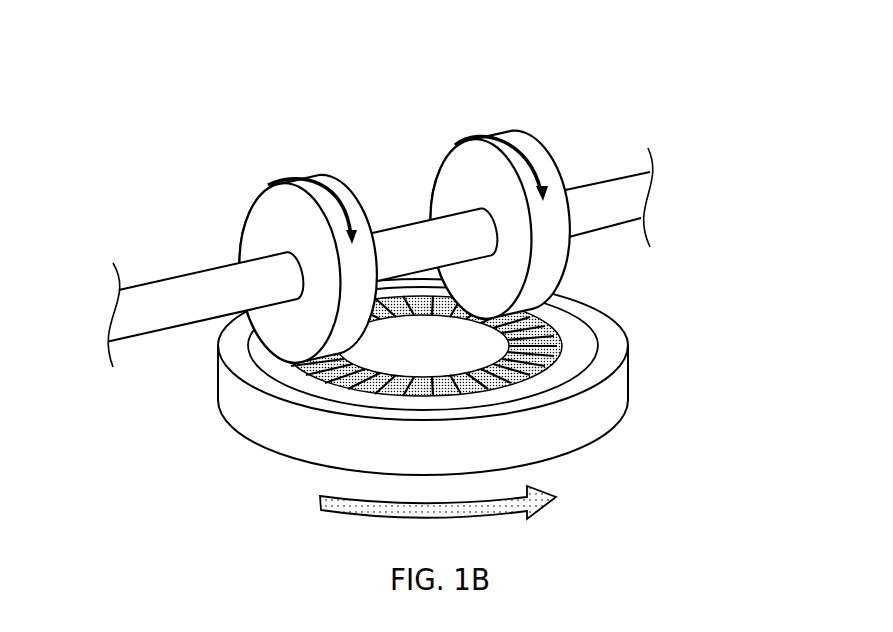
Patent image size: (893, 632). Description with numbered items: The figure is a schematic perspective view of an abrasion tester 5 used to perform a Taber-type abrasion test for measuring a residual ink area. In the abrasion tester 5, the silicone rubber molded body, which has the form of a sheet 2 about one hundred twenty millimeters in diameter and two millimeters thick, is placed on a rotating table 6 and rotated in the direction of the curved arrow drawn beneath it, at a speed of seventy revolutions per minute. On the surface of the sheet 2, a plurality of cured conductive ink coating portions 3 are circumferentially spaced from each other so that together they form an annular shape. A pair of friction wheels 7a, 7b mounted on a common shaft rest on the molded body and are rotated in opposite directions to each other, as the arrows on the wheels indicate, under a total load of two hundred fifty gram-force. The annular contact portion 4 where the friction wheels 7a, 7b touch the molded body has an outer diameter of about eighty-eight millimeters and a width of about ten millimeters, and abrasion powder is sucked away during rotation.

The abrasion tester 5 is at (128, 122).
The sheet 2 is at (582, 347).
The conductive ink coating portion 3 is at (606, 320).
The contact portion 4 is at (550, 365).
The rotating table 6 is at (268, 425).
The friction wheel 7a is at (267, 212).
The friction wheel 7b is at (548, 168).